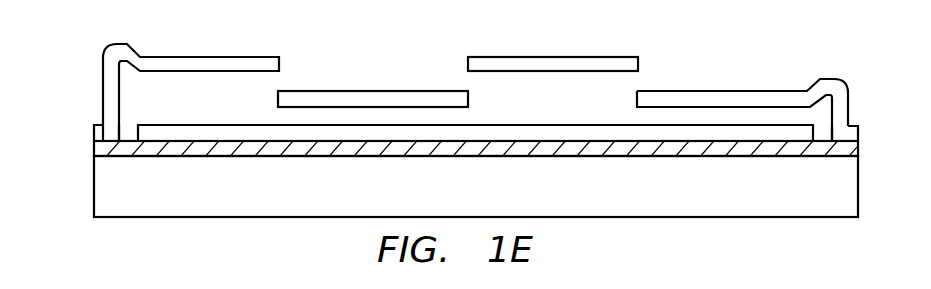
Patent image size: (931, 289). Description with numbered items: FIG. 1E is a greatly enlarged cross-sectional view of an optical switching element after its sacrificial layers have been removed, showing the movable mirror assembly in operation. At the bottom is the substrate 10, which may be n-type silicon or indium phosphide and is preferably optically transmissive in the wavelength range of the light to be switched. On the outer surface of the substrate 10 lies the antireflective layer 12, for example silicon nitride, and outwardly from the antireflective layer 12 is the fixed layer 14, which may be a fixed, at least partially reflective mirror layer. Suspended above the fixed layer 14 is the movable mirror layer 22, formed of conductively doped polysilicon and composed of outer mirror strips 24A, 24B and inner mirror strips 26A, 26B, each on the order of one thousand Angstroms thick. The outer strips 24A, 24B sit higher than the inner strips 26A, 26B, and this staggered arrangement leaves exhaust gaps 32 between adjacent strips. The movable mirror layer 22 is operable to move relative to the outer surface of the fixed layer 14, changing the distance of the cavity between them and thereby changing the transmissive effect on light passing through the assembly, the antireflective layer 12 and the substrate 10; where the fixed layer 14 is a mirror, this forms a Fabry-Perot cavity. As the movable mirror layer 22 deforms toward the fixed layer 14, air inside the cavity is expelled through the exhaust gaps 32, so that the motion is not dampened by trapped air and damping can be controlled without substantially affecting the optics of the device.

The substrate 10 is at (94, 188).
The antireflective layer 12 is at (94, 150).
The fixed layer 14 is at (222, 125).
The movable mirror layer 22 is at (94, 131).
The outer mirror strip 24A is at (211, 56).
The outer mirror strip 24B is at (553, 56).
The inner mirror strip 26A is at (386, 90).
The inner mirror strip 26B is at (742, 90).
The exhaust gaps 32 is at (281, 80).